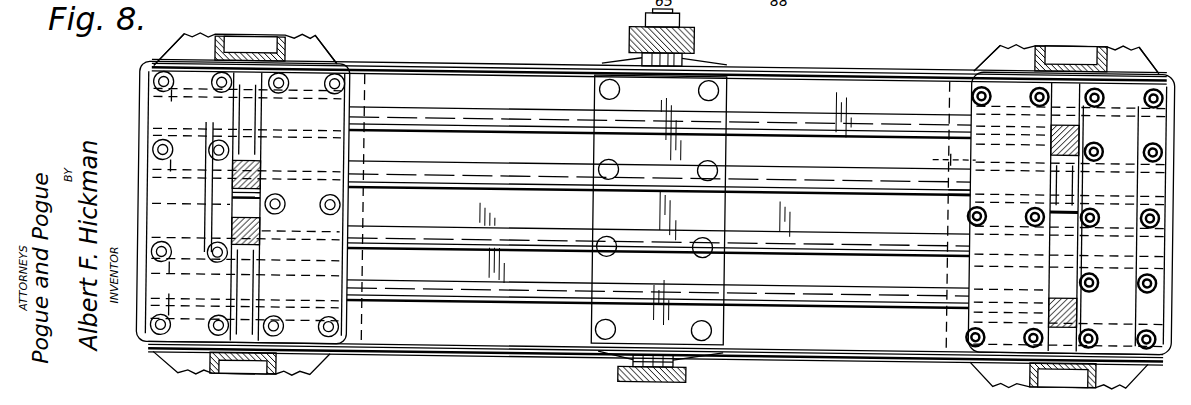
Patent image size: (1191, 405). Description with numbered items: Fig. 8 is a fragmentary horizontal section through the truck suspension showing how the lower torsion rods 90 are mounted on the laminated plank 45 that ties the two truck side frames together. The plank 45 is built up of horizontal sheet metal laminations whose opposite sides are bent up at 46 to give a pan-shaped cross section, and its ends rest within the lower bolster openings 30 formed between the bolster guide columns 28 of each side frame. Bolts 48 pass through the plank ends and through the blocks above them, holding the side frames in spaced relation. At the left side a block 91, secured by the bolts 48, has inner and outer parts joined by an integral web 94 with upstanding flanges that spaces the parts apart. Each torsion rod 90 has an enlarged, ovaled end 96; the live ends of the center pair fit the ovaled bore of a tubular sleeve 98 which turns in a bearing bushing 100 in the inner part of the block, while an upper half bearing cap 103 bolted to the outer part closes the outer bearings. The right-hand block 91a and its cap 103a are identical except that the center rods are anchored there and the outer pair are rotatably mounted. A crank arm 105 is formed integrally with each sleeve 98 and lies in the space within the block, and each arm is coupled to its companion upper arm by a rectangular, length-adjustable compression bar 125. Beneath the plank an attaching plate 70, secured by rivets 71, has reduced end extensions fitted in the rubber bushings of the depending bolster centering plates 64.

The bolster guide columns 28 is at (268, 44).
The lower bolster opening 30 is at (283, 68).
The plank 45 is at (482, 65).
The bent-up sides 46 is at (864, 67).
The bolts 48 is at (200, 76).
The bolster centering plate 64 is at (693, 43).
The attaching plate 70 is at (617, 361).
The rivets 71 is at (619, 90).
The lower torsion rods 90 is at (440, 126).
The block 91 is at (350, 198).
The block 91a is at (966, 204).
The web 94 is at (251, 86).
The end 96 is at (364, 155).
The tubular sleeve 98 is at (942, 159).
The bearing bushing 100 is at (948, 128).
The upper half bearing cap 103 is at (180, 196).
The upper half bearing cap 103a is at (1071, 213).
The crank arm 105 is at (237, 158).
The compression bar 125 is at (258, 182).